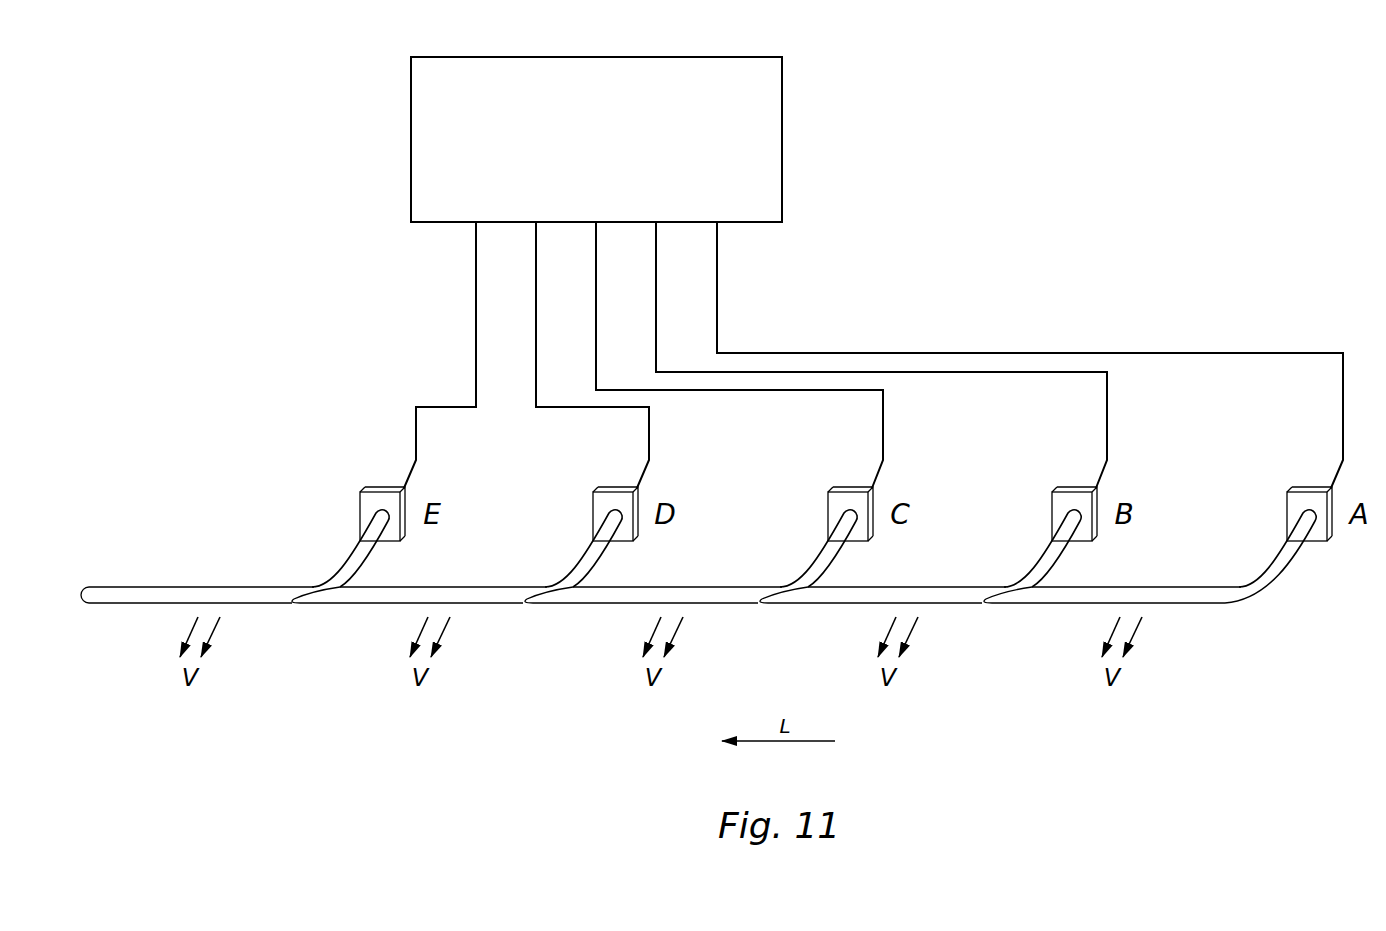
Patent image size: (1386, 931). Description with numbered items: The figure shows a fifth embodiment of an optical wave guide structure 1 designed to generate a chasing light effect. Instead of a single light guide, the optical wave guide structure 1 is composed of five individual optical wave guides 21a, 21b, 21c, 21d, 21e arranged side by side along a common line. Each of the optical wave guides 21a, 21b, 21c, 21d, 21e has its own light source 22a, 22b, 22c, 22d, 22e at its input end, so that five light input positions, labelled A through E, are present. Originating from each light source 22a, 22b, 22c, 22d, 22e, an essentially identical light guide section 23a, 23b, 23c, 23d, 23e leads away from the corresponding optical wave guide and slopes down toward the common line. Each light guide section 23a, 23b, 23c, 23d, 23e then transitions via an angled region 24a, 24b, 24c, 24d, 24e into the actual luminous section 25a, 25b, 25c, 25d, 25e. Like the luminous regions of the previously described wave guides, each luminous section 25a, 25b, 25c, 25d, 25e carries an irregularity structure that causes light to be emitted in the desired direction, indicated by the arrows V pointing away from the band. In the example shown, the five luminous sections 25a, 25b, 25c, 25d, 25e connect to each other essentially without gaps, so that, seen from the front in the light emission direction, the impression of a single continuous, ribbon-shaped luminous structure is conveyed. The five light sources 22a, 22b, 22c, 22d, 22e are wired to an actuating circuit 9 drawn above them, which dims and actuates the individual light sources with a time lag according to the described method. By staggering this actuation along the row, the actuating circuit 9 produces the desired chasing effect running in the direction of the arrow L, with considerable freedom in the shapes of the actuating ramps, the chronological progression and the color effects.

The actuating circuit 9 is at (596, 139).
The optical wave guide structure 1 is at (327, 345).
The light source 22a is at (1303, 502).
The light source 22b is at (1068, 502).
The light source 22c is at (844, 502).
The light source 22d is at (609, 502).
The light source 22e is at (376, 502).
The light guide section 23a is at (1281, 557).
The light guide section 23b is at (1046, 557).
The light guide section 23c is at (822, 557).
The light guide section 23d is at (587, 557).
The light guide section 23e is at (354, 557).
The angled region 24a is at (1247, 588).
The angled region 24b is at (1012, 588).
The angled region 24c is at (788, 588).
The angled region 24d is at (553, 588).
The angled region 24e is at (320, 588).
The luminous section 25a is at (1060, 603).
The luminous section 25b is at (836, 603).
The luminous section 25c is at (601, 603).
The luminous section 25d is at (368, 603).
The luminous section 25e is at (138, 603).
The optical wave guide 21a is at (1172, 613).
The optical wave guide 21b is at (948, 613).
The optical wave guide 21c is at (713, 613).
The optical wave guide 21d is at (480, 613).
The optical wave guide 21e is at (250, 613).